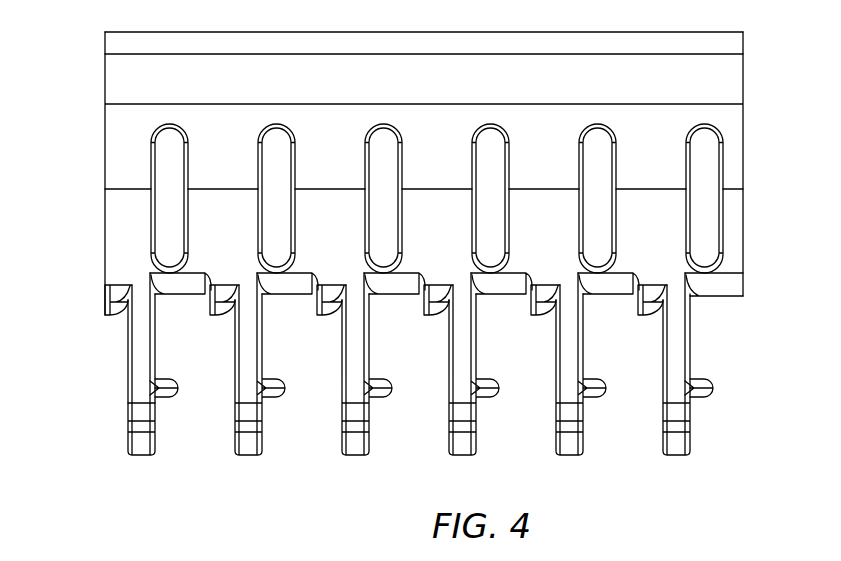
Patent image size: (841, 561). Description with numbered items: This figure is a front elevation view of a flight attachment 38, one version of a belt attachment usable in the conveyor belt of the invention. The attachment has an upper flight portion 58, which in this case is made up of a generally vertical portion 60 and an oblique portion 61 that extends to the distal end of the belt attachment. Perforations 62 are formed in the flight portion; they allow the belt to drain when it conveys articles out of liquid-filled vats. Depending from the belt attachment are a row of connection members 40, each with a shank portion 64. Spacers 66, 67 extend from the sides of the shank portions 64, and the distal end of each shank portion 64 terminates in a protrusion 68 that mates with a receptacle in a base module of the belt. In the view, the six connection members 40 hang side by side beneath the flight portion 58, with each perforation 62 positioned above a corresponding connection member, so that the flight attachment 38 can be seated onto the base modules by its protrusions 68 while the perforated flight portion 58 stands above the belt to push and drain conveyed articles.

The flight attachment 38 is at (411, 273).
The connection members 40 is at (100, 381).
The upper flight portion 58 is at (411, 173).
The vertical portion 60 is at (120, 196).
The oblique portion 61 is at (110, 45).
The perforations 62 is at (707, 239).
The shank portions 64 is at (718, 364).
The spacer 66 is at (115, 292).
The spacer 67 is at (708, 389).
The protrusions 68 is at (137, 425).